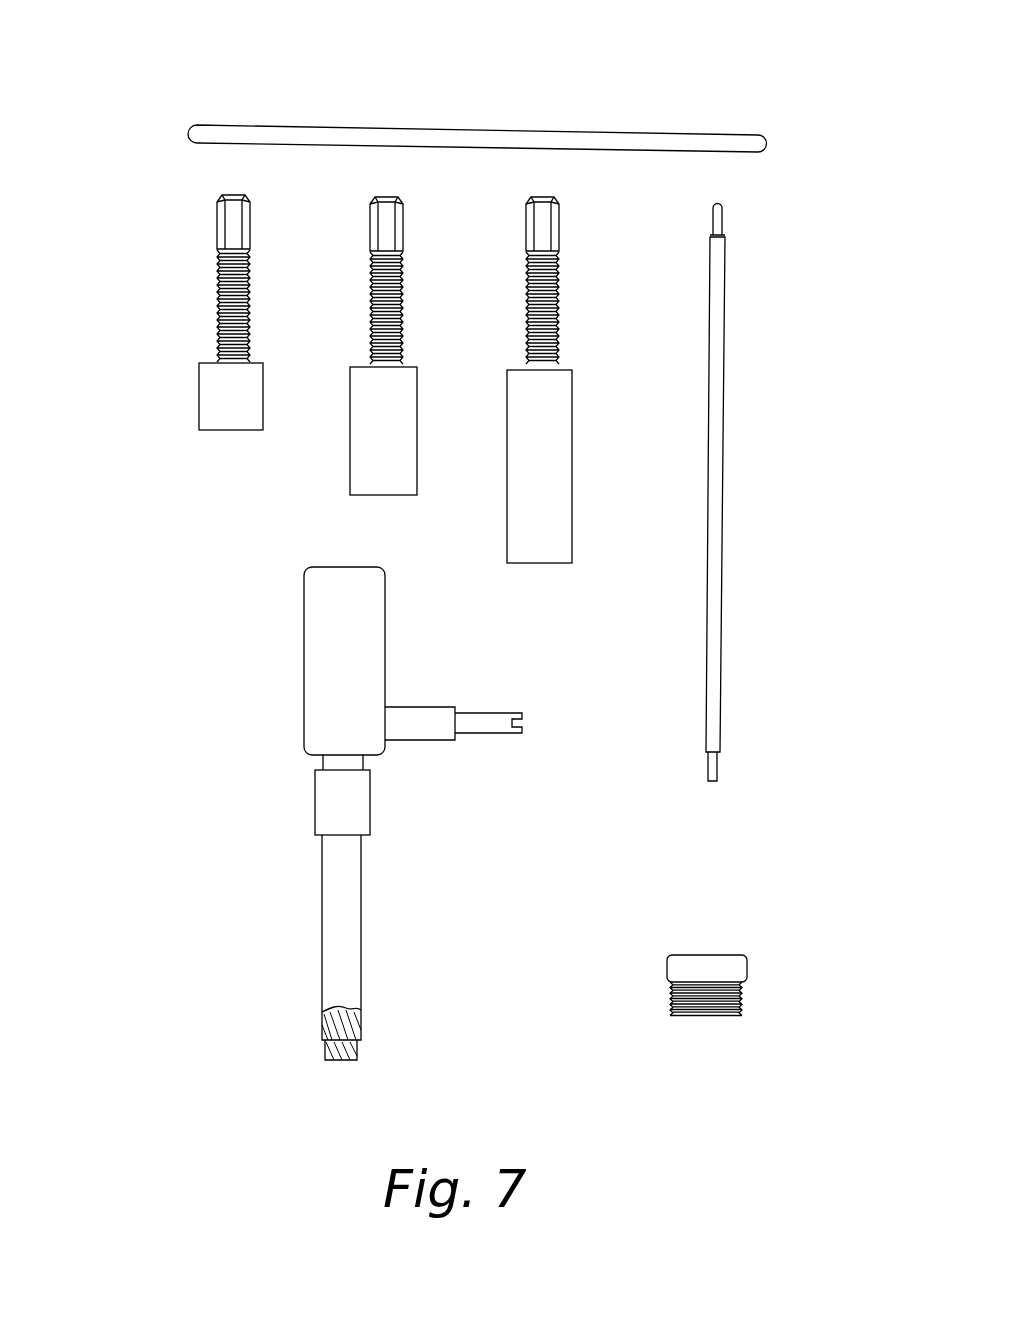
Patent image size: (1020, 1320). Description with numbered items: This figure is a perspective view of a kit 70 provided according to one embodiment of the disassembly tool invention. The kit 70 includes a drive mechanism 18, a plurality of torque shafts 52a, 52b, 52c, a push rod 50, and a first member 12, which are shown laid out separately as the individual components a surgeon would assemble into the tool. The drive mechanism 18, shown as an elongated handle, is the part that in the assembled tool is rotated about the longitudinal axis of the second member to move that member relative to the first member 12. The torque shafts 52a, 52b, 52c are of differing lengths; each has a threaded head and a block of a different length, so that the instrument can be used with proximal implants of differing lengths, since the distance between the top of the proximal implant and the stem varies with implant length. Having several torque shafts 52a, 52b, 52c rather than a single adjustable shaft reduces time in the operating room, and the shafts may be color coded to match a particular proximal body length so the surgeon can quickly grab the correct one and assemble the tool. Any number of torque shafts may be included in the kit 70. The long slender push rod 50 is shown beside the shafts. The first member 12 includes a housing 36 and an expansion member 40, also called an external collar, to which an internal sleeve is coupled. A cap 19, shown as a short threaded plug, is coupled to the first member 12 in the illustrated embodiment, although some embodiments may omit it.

The kit 70 is at (112, 72).
The drive mechanism 18 is at (668, 134).
The torque shaft 52a is at (252, 295).
The torque shaft 52b is at (405, 297).
The torque shaft 52c is at (561, 297).
The push rod 50 is at (722, 483).
The housing 36 is at (382, 636).
The first member 12 is at (413, 813).
The expansion member 40 is at (370, 805).
The cap 19 is at (742, 965).